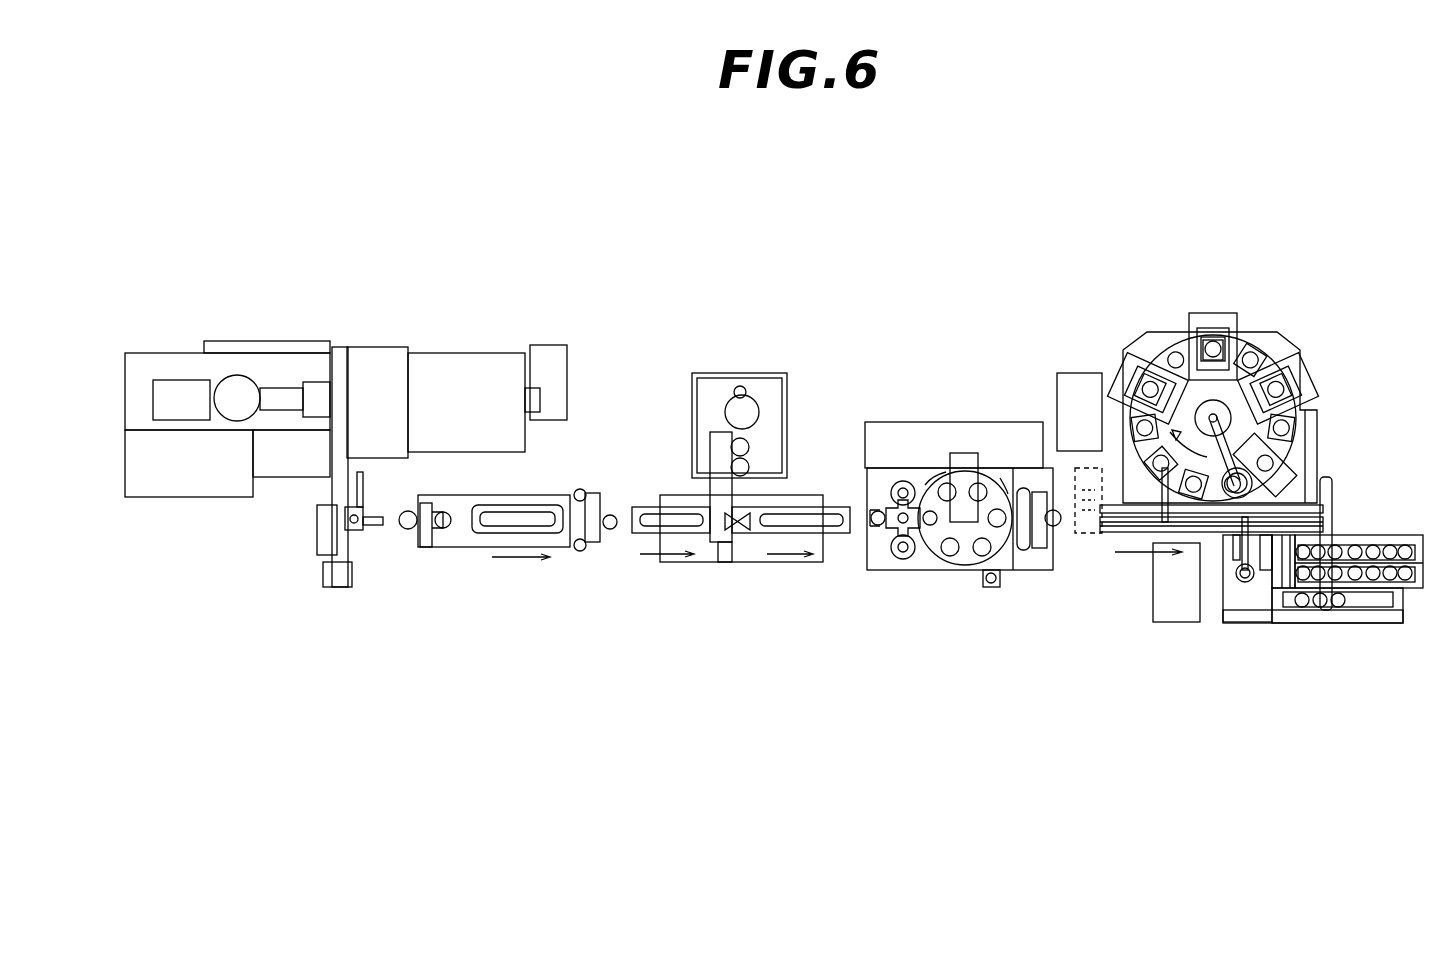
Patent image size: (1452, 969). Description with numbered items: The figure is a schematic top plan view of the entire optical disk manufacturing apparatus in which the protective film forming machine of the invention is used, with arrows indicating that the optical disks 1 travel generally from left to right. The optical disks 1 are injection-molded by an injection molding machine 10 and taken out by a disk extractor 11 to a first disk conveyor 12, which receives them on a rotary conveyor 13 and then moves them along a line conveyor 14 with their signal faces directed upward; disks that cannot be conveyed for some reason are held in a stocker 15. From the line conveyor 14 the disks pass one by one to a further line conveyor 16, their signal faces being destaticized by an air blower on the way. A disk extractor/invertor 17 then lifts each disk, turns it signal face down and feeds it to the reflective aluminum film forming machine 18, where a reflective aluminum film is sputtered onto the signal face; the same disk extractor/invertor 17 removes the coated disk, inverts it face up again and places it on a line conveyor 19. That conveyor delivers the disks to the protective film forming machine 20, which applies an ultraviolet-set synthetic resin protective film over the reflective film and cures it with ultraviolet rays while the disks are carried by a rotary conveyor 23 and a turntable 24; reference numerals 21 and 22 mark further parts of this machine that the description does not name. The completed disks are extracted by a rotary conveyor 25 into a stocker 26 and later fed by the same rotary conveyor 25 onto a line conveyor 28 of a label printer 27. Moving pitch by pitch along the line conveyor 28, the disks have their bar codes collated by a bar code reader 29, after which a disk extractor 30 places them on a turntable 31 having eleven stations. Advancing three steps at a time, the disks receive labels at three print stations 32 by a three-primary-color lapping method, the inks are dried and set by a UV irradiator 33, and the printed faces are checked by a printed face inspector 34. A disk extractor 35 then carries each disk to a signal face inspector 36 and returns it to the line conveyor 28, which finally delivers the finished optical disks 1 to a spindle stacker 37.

The optical disk 1 is at (365, 410).
The injection molding machine 10 is at (447, 352).
The disk extractor 11 is at (358, 478).
The first disk conveyor 12 is at (524, 493).
The rotary conveyor 13 is at (437, 548).
The line conveyor 14 is at (518, 535).
The stocker 15 is at (590, 493).
The line conveyor 16 is at (658, 530).
The disk extractor/invertor 17 is at (712, 455).
The reflective aluminum film forming machine 18 is at (757, 378).
The line conveyor 19 is at (825, 560).
The protective film forming machine 20 is at (968, 398).
The turret gripper 21 is at (880, 485).
The pusher 22 is at (978, 455).
The rotary conveyor 23 is at (905, 480).
The turntable 24 is at (962, 570).
The rotary conveyor 25 is at (1010, 570).
The stocker 26 is at (1025, 488).
The label printer 27 is at (1296, 306).
The line conveyor 28 is at (1130, 555).
The bar code reader 29 is at (1090, 540).
The disk extractor 30 is at (1106, 455).
The turntable 31 is at (1265, 330).
The print station 32 is at (1128, 362).
The UV irradiator 33 is at (1292, 455).
The printed face inspector 34 is at (1245, 486).
The disk extractor 35 is at (1280, 600).
The signal face inspector 36 is at (1218, 600).
The spindle stacker 37 is at (1370, 610).